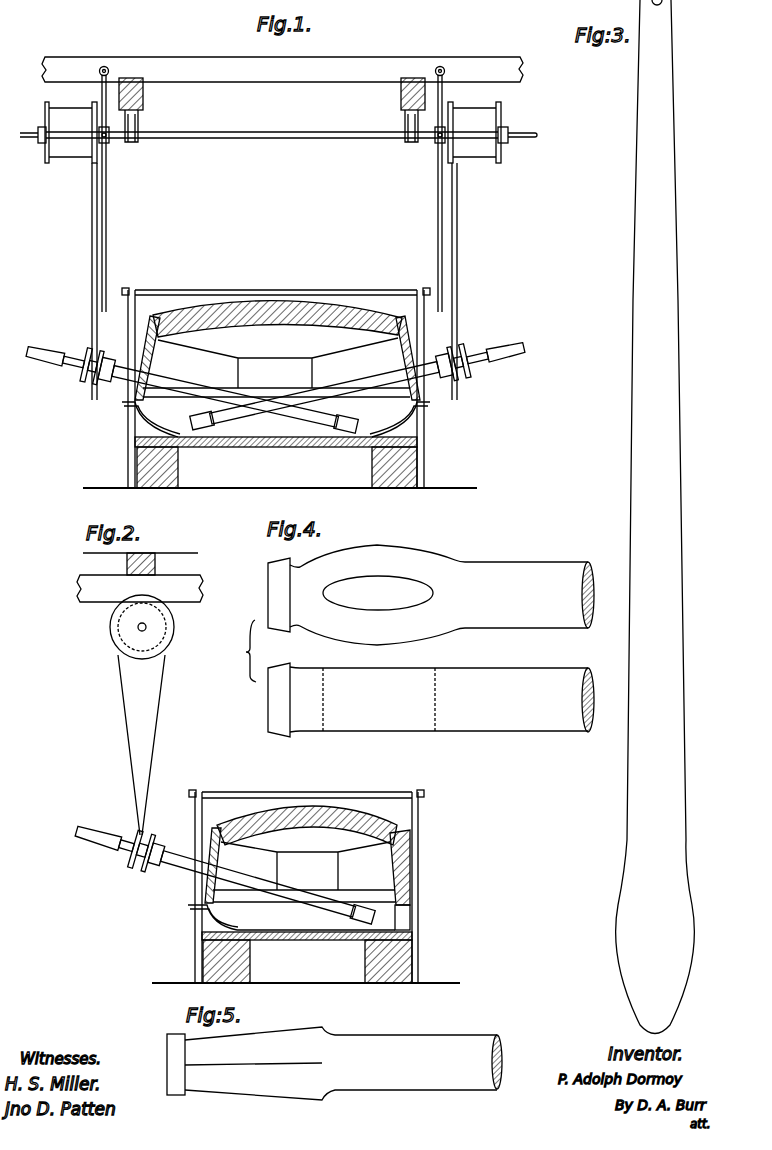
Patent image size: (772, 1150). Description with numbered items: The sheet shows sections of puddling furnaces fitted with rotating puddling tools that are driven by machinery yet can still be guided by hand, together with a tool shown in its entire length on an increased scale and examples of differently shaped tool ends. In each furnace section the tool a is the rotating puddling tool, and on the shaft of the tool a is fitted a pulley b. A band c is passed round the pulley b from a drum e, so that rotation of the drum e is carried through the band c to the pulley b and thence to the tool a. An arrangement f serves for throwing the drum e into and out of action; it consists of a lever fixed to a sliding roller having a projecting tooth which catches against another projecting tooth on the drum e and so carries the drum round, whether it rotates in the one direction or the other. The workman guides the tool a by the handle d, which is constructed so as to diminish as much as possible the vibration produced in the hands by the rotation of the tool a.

In FIG. 1, the tool a is at (275, 396).
In FIG. 2, the tool a is at (267, 886).
In FIG. 1, the pulley b is at (275, 351).
In FIG. 2, the pulley b is at (146, 853).
In FIG. 1, the band c is at (275, 281).
In FIG. 1, the handle d is at (276, 350).
In FIG. 2, the handle d is at (105, 835).
In FIG. 1, the drum e is at (273, 132).
In FIG. 1, the arrangement for throwing the drum into and out of action f is at (272, 190).